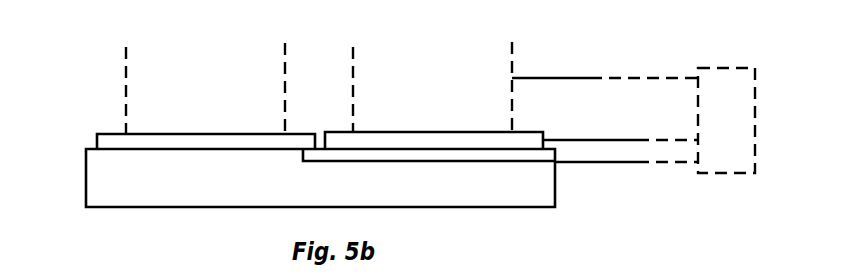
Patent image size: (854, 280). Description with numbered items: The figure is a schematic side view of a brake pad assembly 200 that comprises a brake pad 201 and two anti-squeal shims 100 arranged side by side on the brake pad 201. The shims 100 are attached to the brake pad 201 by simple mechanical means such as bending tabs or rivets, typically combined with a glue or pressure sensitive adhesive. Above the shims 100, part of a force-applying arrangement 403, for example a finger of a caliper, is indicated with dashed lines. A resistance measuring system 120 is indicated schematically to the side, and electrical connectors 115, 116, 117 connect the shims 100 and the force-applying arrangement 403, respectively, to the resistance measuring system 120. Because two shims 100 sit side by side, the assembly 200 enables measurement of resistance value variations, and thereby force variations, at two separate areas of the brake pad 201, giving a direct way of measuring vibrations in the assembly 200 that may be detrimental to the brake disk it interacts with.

The anti-squeal shim 100 is at (165, 134).
The electrical connector 115 is at (590, 140).
The electrical connector 116 is at (601, 78).
The electrical connector 117 is at (607, 163).
The resistance measuring system 120 is at (740, 68).
The brake pad assembly 200 is at (309, 60).
The brake pad 201 is at (86, 181).
The force-applying arrangement 403 is at (126, 80).